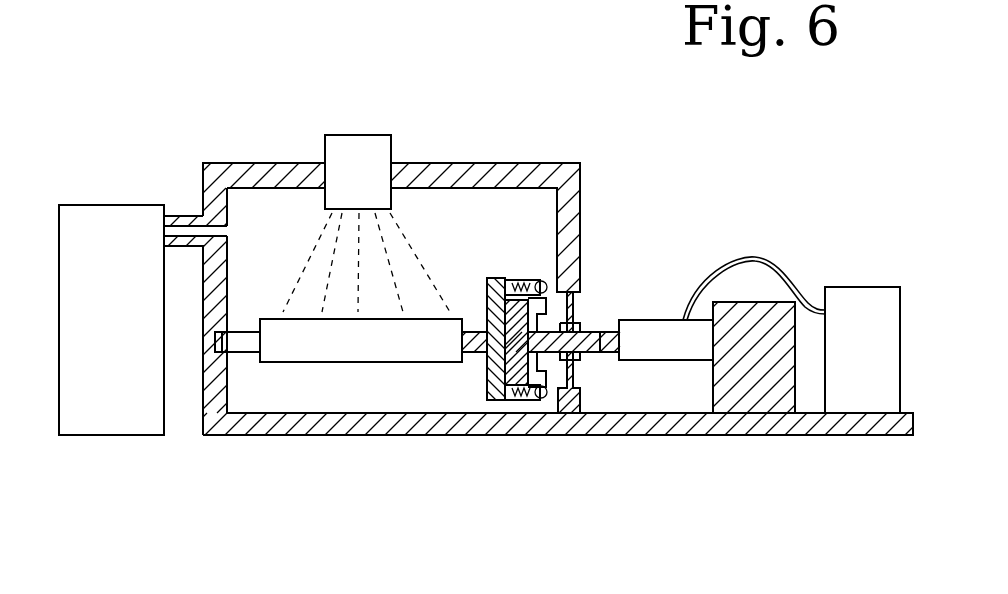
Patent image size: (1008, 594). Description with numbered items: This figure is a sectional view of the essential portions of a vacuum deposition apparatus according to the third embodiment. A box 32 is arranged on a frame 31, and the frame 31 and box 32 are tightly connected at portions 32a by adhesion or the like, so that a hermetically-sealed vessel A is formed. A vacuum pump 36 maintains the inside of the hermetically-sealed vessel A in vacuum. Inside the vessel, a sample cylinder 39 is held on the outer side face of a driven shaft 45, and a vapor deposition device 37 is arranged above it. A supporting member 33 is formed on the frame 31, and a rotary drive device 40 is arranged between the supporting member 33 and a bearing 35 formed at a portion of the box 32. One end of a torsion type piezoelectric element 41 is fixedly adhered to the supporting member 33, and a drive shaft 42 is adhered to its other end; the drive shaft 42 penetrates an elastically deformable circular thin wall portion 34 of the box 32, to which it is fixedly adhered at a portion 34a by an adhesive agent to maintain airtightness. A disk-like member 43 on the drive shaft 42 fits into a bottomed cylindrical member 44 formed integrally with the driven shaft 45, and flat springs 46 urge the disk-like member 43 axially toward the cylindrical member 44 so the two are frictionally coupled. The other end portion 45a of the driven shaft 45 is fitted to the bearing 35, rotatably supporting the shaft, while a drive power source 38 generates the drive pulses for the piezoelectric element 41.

The frame 31 is at (332, 428).
The box 32 is at (562, 170).
The portions 32a is at (225, 415).
The supporting member 33 is at (762, 403).
The thin wall portion 34 is at (572, 368).
The portion 34a is at (585, 305).
The bearing 35 is at (205, 349).
The vacuum pump 36 is at (130, 222).
The vapor deposition device 37 is at (348, 142).
The drive power source 38 is at (850, 303).
The sample cylinder 39 is at (280, 332).
The rotary drive device 40 is at (473, 313).
The torsion type piezoelectric element 41 is at (630, 320).
The drive shaft 42 is at (613, 345).
The disk-like member 43 is at (543, 352).
The bottomed cylindrical member 44 is at (500, 285).
The driven shaft 45 is at (467, 360).
The other end portion 45a is at (238, 352).
The flat springs 46 is at (505, 383).
The hermetically-sealed vessel A is at (419, 203).